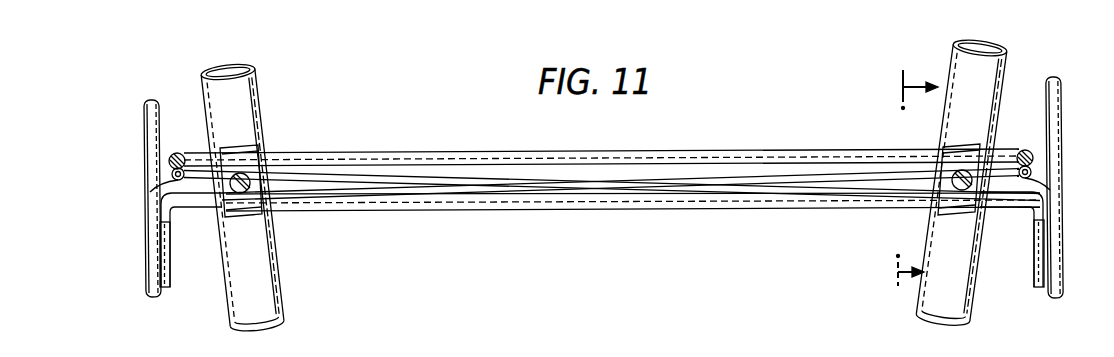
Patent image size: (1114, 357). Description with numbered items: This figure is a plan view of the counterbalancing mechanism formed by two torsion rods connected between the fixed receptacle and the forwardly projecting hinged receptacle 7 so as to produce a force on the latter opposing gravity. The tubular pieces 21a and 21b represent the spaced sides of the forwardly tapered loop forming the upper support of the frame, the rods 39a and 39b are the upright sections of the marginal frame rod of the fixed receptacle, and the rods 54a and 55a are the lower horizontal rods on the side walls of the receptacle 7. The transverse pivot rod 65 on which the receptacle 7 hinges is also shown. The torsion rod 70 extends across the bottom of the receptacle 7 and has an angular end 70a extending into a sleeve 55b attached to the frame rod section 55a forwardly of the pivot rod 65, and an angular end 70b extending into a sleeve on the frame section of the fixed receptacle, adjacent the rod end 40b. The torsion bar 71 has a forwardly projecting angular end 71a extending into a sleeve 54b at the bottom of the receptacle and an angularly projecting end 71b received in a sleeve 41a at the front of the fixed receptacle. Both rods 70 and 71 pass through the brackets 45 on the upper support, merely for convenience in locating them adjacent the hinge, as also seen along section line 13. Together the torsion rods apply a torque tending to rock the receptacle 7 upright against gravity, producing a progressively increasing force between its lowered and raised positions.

The forwardly projecting receptacle 7 is at (1070, 128).
The section line 13- 13 is at (904, 178).
The tubular piece 21a is at (280, 311).
The tubular piece 21b is at (960, 304).
The upright rod section 39a is at (177, 153).
The upright rod section 39b is at (1025, 150).
The wire end 40b is at (150, 192).
The sleeve 41a is at (1050, 190).
The bracket 45 is at (238, 160).
The lower horizontal rod 54a is at (148, 262).
The sleeve 54b is at (170, 280).
The lower horizontal rod 55a is at (1057, 258).
The sleeve 55b is at (1034, 276).
The transverse pivot rod 65 is at (586, 206).
The torsion rod 70 is at (398, 176).
The angular end 70a is at (1038, 214).
The angular end 70b is at (172, 174).
The torsion bar 71 is at (366, 195).
The angular end 71a is at (172, 207).
The angularly projecting end 71b is at (1032, 172).